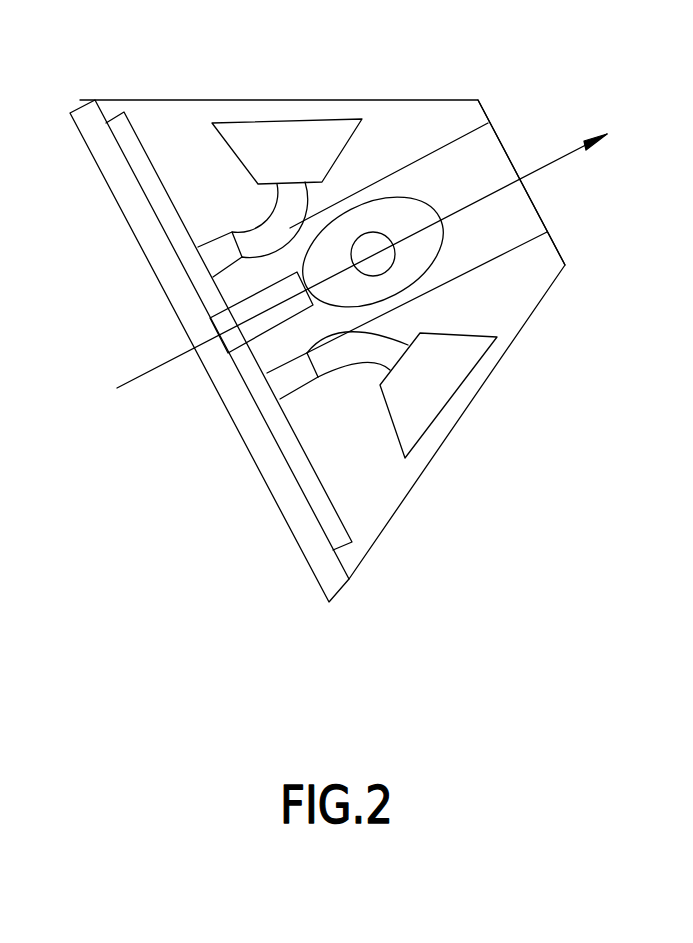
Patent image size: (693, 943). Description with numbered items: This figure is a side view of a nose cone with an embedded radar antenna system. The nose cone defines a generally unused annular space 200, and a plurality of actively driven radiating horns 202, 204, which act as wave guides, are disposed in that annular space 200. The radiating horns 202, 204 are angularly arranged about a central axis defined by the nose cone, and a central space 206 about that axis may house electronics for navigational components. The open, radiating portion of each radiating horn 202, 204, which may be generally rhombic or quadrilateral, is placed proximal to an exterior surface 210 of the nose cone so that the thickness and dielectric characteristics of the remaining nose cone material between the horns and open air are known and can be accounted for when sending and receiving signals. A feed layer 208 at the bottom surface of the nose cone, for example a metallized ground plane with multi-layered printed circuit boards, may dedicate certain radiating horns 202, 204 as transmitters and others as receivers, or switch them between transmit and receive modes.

The annular space 200 is at (400, 110).
The radiating horn 202 is at (288, 133).
The radiating horn 204 is at (443, 390).
The central space 206 is at (485, 148).
The feed layer 208 is at (288, 498).
The exterior surface 210 is at (370, 101).